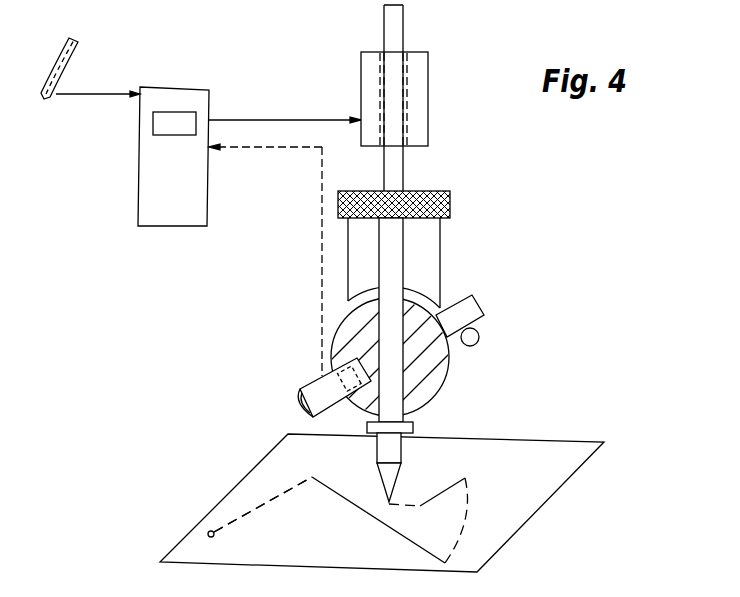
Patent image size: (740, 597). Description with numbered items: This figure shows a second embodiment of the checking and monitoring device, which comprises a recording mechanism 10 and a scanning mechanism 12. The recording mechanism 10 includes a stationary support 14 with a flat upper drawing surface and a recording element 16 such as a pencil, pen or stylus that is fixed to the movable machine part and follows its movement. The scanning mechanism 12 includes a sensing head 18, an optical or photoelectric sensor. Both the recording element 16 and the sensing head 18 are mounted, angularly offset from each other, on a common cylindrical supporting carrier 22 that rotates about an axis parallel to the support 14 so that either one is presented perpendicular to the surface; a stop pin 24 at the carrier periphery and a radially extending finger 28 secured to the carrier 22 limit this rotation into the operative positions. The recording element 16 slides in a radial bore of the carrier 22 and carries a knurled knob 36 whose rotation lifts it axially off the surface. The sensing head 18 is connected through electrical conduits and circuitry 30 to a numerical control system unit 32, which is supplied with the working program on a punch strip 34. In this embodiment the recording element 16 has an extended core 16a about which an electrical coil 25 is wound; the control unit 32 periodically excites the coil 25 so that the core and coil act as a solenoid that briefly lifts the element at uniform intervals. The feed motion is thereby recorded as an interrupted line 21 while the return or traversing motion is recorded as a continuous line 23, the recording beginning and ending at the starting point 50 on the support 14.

The recording mechanism 10 is at (436, 485).
The scanning mechanism 12 is at (309, 368).
The stationary support 14 is at (525, 510).
The recording element 16 is at (397, 418).
The extended core 16a is at (403, 165).
The sensing head 18 is at (306, 391).
The interrupted line 21 is at (248, 513).
The cylindrical supporting carrier 22 is at (447, 373).
The continuous line 23 is at (382, 523).
The stop pin 24 is at (480, 339).
The electrical coil 25 is at (420, 70).
The radially extending finger 28 is at (465, 311).
The electrical conduits and circuitry 30 is at (260, 149).
The numerical control system unit 32 is at (201, 99).
The punch strip 34 is at (70, 59).
The knurled knob 36 is at (436, 192).
The starting point 50 is at (210, 530).